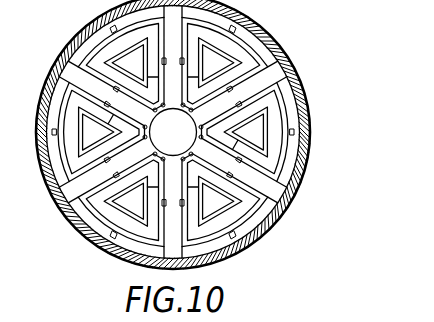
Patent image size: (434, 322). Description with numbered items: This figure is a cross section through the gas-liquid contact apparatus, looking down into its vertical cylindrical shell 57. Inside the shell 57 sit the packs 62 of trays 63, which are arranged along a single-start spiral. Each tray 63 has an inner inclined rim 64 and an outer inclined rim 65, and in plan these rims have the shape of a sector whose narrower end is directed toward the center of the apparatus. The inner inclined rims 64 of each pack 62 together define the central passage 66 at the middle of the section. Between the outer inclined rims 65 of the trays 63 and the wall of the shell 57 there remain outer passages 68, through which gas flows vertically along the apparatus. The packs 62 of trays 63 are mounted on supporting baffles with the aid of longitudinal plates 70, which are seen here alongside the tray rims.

The vertical cylindrical shell 57 is at (305, 117).
The pack 62 is at (288, 96).
The tray 63 is at (277, 140).
The inner inclined rim 64 is at (258, 211).
The outer inclined rim 65 is at (288, 167).
The central passage 66 is at (123, 204).
The outer passage 68 is at (260, 78).
The longitudinal plate 70 is at (241, 239).